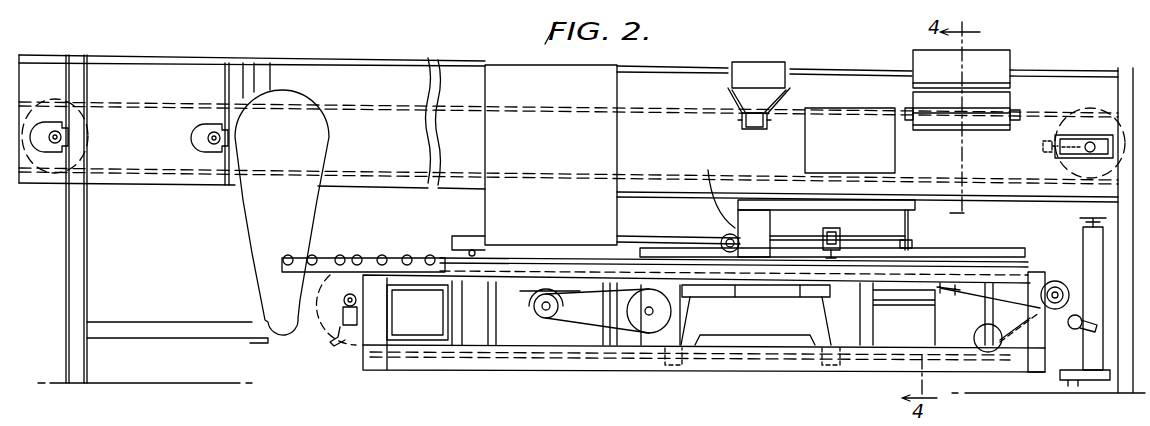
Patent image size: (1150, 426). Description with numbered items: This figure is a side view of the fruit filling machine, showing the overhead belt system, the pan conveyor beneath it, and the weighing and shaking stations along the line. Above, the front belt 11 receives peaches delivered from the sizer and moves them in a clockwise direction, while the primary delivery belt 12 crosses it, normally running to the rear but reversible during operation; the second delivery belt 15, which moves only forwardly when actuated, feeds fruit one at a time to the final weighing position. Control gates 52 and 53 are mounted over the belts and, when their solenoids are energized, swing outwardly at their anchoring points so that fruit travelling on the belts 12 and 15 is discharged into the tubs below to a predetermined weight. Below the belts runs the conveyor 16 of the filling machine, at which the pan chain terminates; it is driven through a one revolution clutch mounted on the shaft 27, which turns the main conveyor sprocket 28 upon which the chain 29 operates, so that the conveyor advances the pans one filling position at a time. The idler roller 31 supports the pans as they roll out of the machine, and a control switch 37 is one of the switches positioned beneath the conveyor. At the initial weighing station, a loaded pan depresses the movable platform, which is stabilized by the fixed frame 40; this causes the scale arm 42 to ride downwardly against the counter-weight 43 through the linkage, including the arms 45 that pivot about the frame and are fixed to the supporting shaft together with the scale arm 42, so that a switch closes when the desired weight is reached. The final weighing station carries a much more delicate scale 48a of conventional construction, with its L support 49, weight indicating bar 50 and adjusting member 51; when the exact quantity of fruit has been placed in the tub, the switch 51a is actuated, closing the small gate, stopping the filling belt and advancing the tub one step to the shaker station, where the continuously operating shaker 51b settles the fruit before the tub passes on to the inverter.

The front belt 11 is at (548, 110).
The primary delivery belt 12 is at (985, 118).
The second delivery belt 15 is at (752, 130).
The conveyor 16 is at (1024, 346).
The shaft 27 is at (344, 301).
The main conveyor sprocket 28 is at (346, 283).
The chain 29 is at (441, 360).
The roller 31 is at (337, 250).
The control switch 37 is at (347, 309).
The fixed frame 40 is at (862, 365).
The scale arm 42 is at (1012, 310).
The counter-weight 43 is at (1072, 329).
The arm 45 is at (953, 296).
The scale 48a is at (705, 186).
The L support 49 is at (779, 204).
The weight indicating bar 50 is at (808, 236).
The adjusting member 51 is at (845, 241).
The switch 51a is at (722, 240).
The shaker 51b is at (530, 312).
The control gate 52 is at (982, 57).
The control gate 53 is at (752, 68).